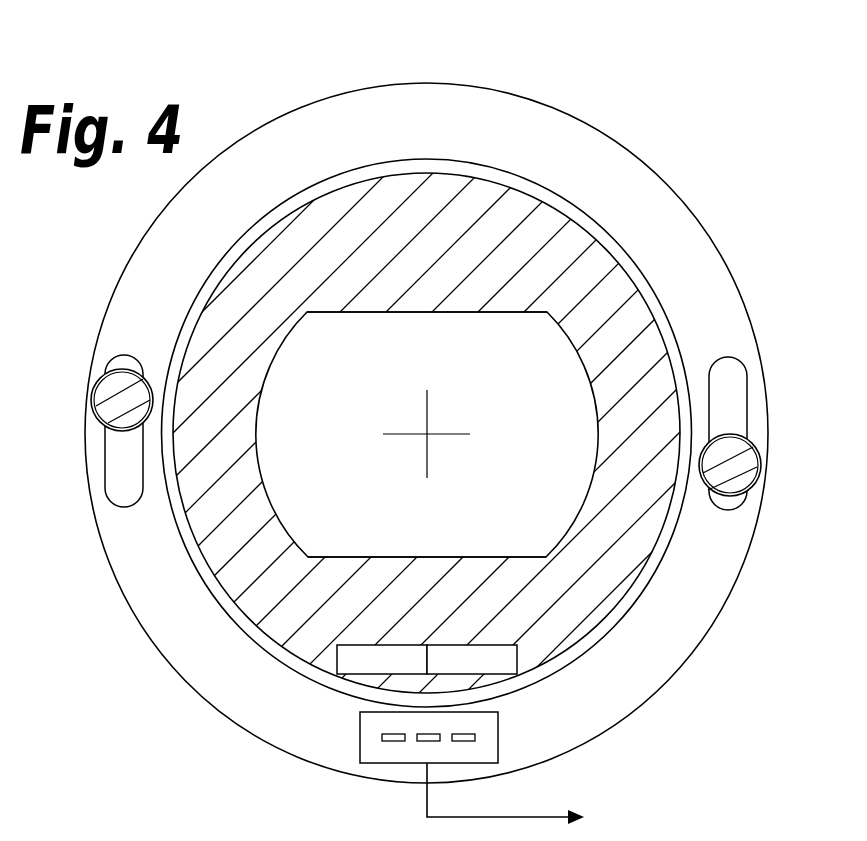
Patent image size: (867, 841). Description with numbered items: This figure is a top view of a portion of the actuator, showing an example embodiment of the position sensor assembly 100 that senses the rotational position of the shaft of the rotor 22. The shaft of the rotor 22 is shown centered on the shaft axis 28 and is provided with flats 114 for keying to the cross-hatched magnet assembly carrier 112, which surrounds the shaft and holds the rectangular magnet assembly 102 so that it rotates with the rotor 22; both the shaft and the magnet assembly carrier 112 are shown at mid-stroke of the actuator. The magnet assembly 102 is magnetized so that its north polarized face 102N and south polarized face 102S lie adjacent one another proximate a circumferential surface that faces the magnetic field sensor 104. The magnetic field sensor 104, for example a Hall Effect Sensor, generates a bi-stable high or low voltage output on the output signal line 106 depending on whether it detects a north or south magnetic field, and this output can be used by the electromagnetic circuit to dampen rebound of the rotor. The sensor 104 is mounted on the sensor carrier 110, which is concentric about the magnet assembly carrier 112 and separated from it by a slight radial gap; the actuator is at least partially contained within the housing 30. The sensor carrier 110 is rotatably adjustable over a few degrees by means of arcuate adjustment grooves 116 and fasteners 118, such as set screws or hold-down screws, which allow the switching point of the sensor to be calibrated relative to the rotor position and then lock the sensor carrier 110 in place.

The rotor 22 is at (440, 362).
The shaft axis 28 is at (427, 434).
The housing 30 is at (425, 165).
The position sensor assembly 100 is at (507, 717).
The magnet assembly 102 is at (464, 663).
The south polarized face 102S is at (350, 675).
The north polarized face 102N is at (512, 668).
The magnetic field sensor 104 is at (483, 748).
The output signal line 106 is at (490, 813).
The sensor carrier 110 is at (673, 218).
The magnet assembly carrier 112 is at (608, 340).
The flats 114 is at (458, 313).
The arcuate adjustment grooves 116 is at (747, 381).
The fasteners 118 is at (747, 460).